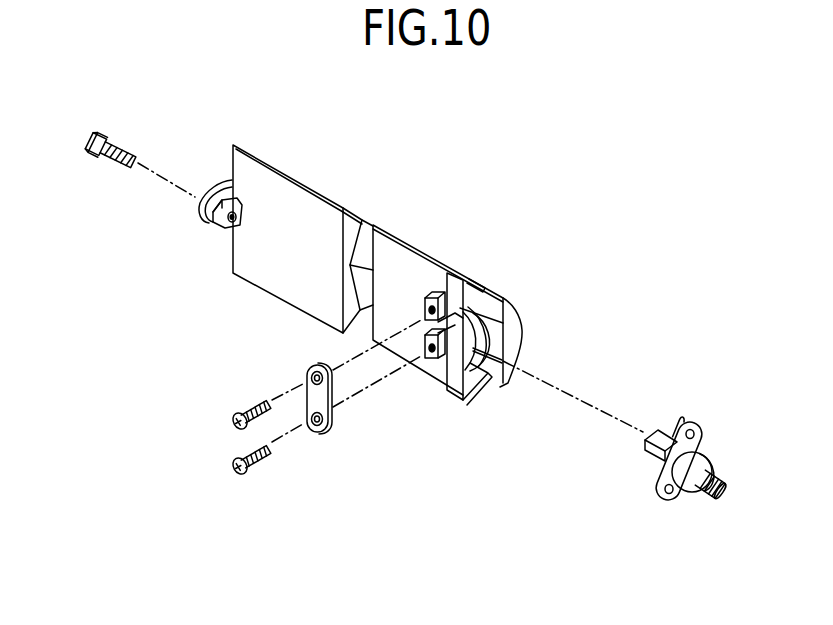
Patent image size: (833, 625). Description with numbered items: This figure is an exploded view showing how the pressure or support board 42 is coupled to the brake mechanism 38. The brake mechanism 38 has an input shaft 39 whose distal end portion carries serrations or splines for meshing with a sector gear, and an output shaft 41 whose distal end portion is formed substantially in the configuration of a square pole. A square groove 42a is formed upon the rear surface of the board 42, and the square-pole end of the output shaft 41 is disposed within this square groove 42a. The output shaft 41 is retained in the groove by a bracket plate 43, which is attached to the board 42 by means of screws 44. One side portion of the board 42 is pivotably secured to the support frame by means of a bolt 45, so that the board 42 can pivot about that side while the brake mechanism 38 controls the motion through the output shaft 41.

The brake mechanism 38 is at (700, 430).
The input shaft 39 is at (717, 467).
The output shaft 41 is at (660, 437).
The pressure or support board 42 is at (407, 264).
The square groove 42a is at (428, 331).
The bracket plate 43 is at (307, 372).
The screws 44 is at (263, 458).
The bolt 45 is at (123, 150).